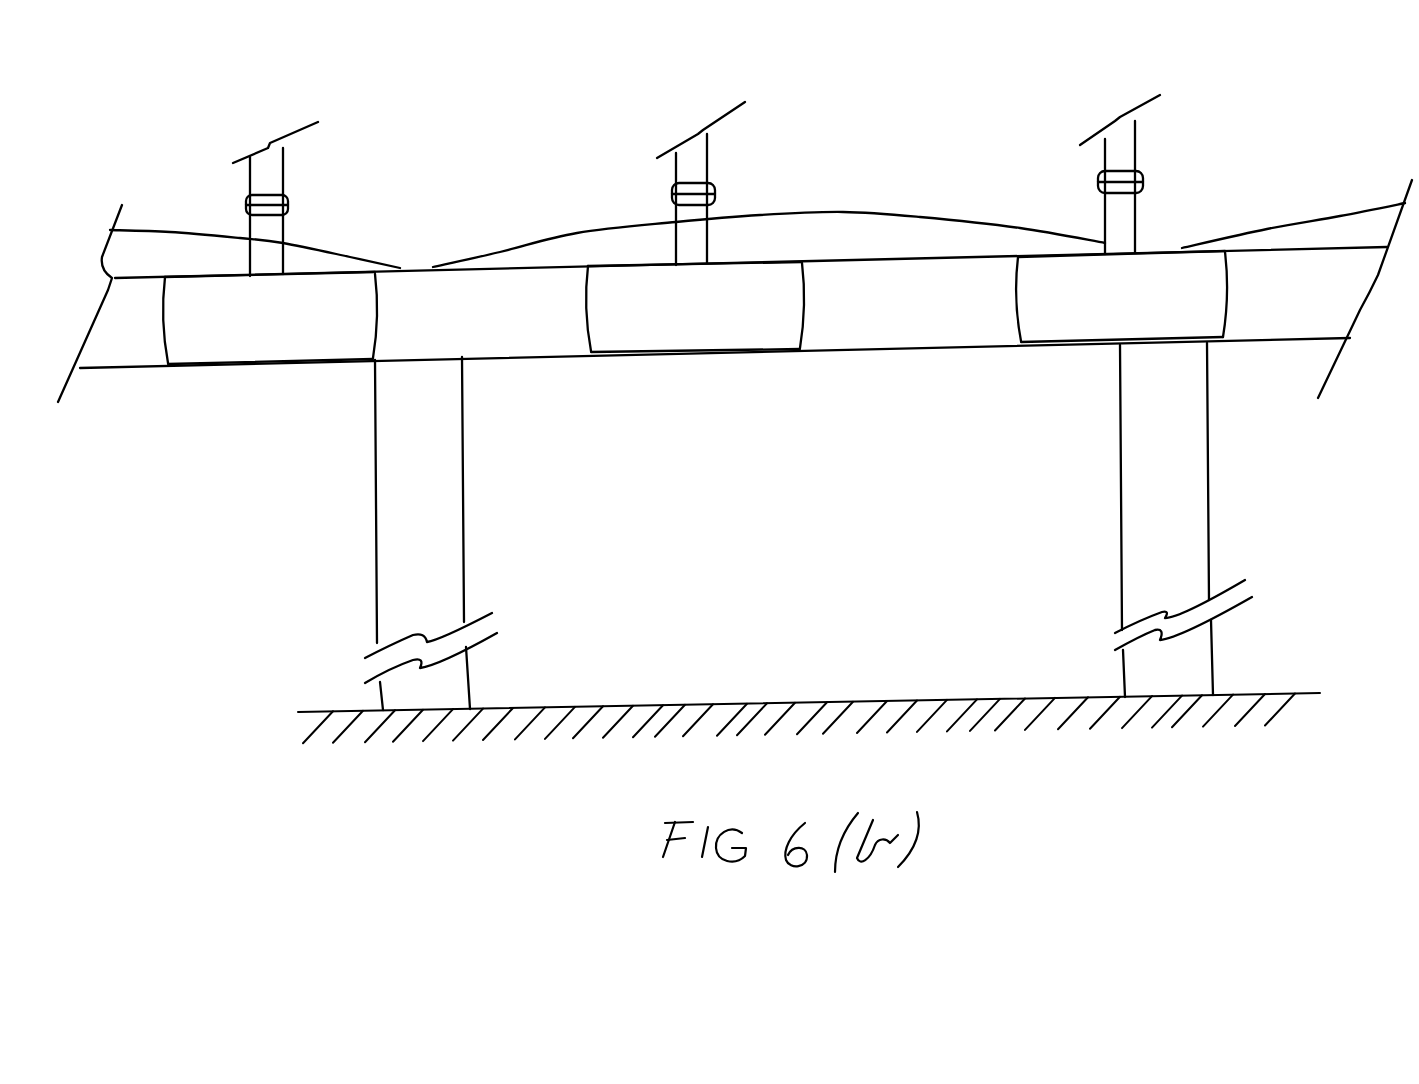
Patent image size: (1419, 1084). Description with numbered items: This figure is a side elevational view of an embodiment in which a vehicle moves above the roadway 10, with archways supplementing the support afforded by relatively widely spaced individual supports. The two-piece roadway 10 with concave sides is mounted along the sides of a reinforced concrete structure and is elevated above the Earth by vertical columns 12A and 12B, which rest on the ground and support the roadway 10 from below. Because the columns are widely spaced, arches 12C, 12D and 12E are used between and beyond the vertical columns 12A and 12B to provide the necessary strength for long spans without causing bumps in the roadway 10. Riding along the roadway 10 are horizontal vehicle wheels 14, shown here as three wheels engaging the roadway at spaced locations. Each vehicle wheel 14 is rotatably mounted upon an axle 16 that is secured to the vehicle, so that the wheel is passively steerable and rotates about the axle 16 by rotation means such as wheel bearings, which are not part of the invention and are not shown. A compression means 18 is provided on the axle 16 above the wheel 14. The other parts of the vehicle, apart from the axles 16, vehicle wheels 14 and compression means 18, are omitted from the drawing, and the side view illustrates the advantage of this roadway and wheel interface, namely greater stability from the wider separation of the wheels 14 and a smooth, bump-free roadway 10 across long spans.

The roadway 10 is at (523, 337).
The vertical column 12A is at (437, 557).
The vertical column 12B is at (1178, 540).
The arch 12C is at (172, 247).
The arch 12D is at (780, 230).
The arch 12E is at (1347, 223).
The vehicle wheel 14 is at (277, 340).
The axle 16 is at (283, 168).
The compression means 18 is at (672, 197).